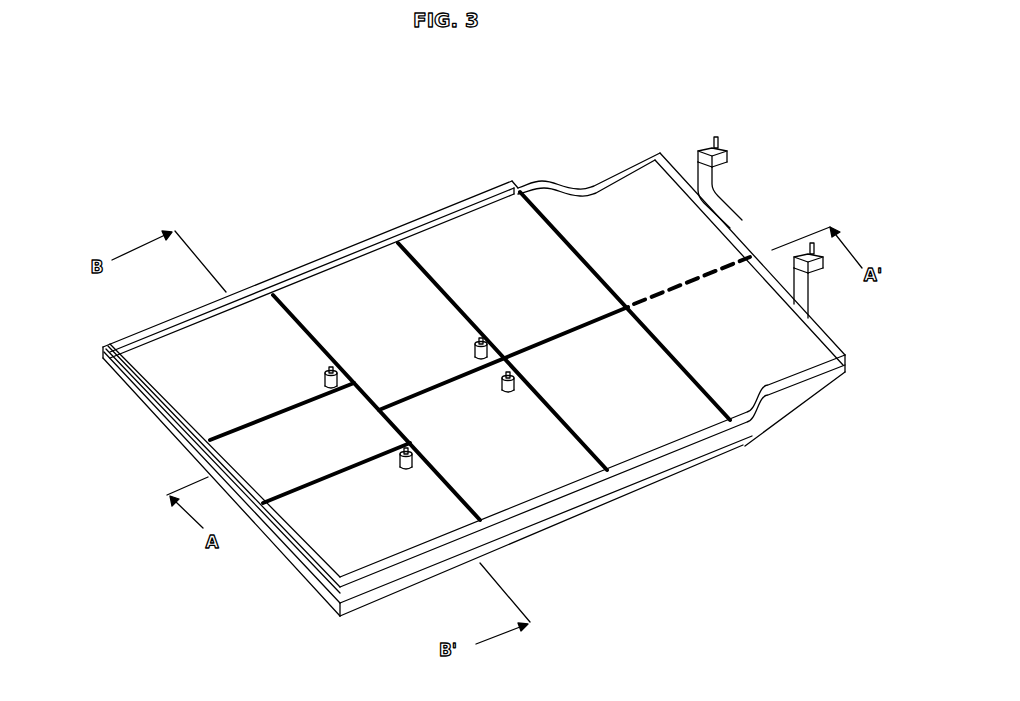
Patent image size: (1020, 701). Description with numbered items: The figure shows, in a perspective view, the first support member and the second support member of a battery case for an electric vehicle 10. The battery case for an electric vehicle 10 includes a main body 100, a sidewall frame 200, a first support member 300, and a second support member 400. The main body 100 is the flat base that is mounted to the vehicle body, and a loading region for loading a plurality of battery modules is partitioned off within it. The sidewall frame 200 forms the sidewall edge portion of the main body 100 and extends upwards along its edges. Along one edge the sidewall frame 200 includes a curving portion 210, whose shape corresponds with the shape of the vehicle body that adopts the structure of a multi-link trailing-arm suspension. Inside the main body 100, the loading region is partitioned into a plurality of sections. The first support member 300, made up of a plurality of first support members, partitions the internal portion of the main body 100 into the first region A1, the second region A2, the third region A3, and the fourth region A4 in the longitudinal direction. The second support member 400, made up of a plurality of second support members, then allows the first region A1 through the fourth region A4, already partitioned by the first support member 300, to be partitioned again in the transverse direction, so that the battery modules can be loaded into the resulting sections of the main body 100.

The battery case for an electric vehicle 10 is at (775, 193).
The main body 100 is at (318, 586).
The sidewall frame 200 is at (120, 354).
The curving portion 210 is at (557, 186).
The first support member 300 is at (521, 196).
The second support member 400 is at (290, 487).
The first region A1 is at (189, 360).
The second region A2 is at (491, 493).
The third region A3 is at (659, 420).
The fourth region A4 is at (755, 350).